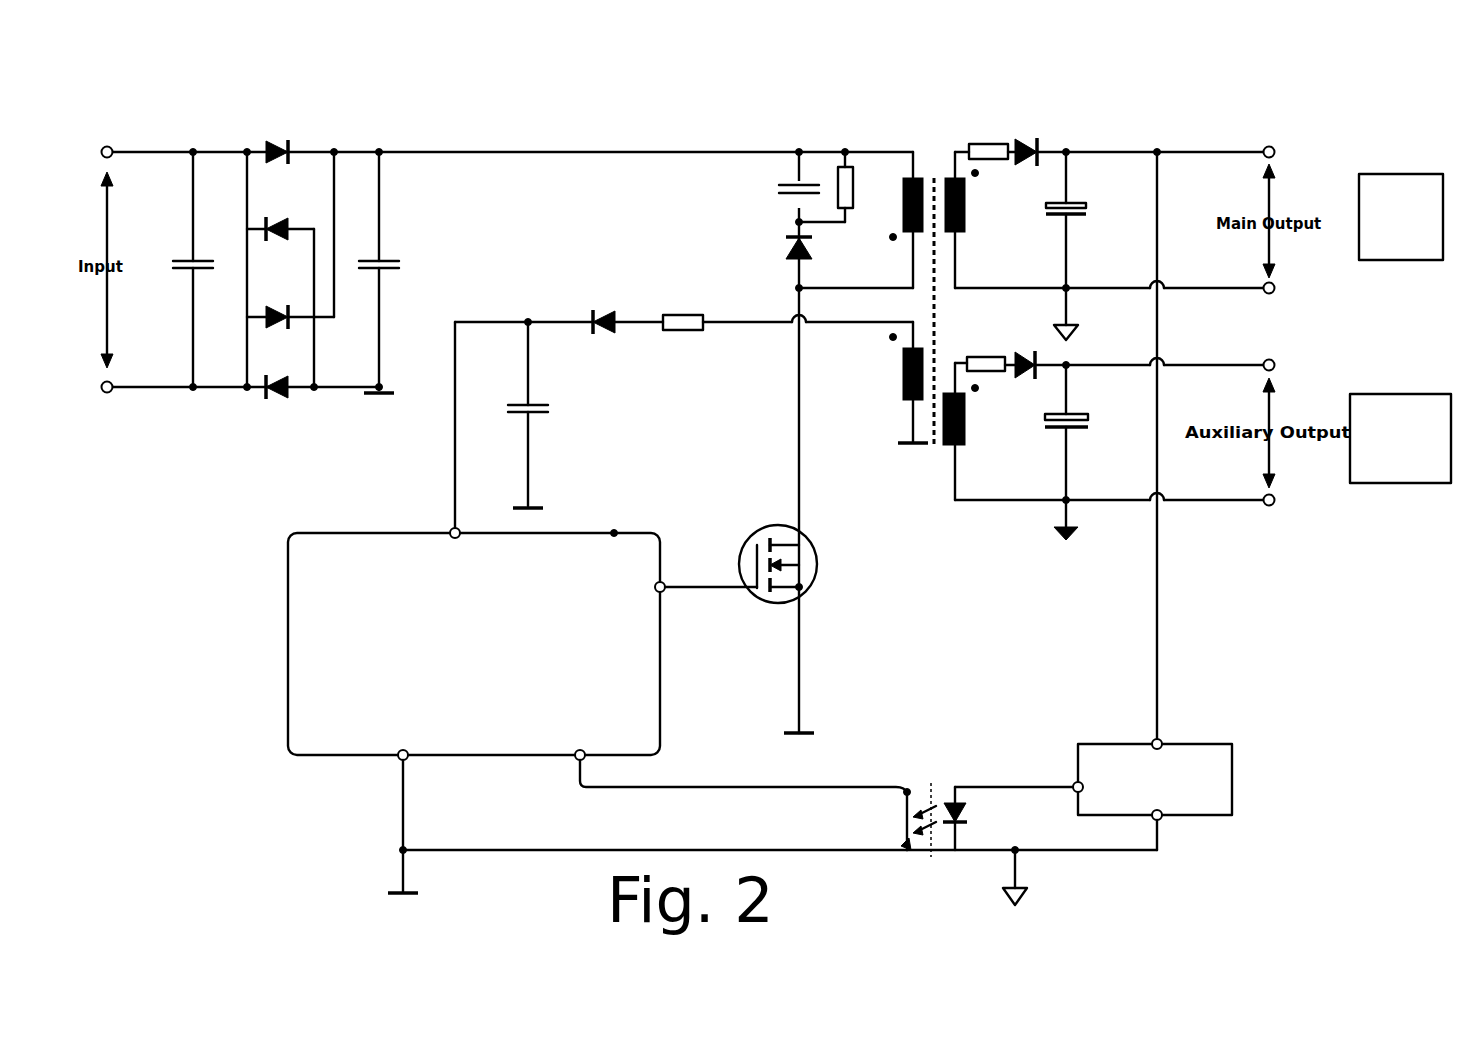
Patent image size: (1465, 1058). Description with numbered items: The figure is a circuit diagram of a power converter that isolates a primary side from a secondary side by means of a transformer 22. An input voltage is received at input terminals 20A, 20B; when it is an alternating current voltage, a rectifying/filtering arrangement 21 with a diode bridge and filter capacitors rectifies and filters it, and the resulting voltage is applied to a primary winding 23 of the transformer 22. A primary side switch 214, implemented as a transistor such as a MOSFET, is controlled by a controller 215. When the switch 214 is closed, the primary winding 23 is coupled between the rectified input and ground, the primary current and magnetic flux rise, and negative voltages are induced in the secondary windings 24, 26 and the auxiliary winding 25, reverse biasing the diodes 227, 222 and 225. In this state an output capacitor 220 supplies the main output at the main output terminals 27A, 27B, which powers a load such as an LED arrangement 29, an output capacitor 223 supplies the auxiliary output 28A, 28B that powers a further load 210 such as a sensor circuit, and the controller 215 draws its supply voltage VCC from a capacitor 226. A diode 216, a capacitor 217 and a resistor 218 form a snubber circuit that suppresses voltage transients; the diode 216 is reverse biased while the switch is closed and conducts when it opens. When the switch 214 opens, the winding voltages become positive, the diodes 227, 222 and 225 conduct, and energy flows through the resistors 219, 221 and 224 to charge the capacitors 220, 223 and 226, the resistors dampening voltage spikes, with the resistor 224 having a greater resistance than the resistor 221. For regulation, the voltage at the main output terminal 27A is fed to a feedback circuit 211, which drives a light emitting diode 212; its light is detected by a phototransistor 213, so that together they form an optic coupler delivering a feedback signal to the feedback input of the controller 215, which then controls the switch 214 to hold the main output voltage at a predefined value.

The input terminal 20A is at (113, 146).
The input terminal 20B is at (112, 392).
The rectifying/filtering arrangement 21 is at (276, 426).
The transformer 22 is at (940, 508).
The primary winding 23 is at (903, 190).
The secondary winding 24 is at (951, 176).
The auxiliary winding 25 is at (903, 372).
The secondary winding 26 is at (965, 420).
The main output terminal 27A is at (1277, 147).
The main output terminal 27B is at (1276, 294).
The auxiliary output terminal 28A is at (1276, 367).
The auxiliary output terminal 28B is at (1276, 505).
The LED arrangement 29 is at (1378, 172).
The load 210 is at (1380, 393).
The feedback circuit 211 is at (1196, 745).
The light emitting diode 212 is at (968, 805).
The phototransistor 213 is at (909, 790).
The primary side switch 214 is at (817, 572).
The controller 215 is at (614, 533).
The diode 216 is at (788, 252).
The capacitor 217 is at (772, 190).
The resistor 218 is at (830, 172).
The resistor 219 is at (990, 142).
The output capacitor 220 is at (1082, 195).
The resistor 221 is at (975, 356).
The diode 222 is at (1030, 355).
The output capacitor 223 is at (1084, 416).
The resistor 224 is at (678, 333).
The diode 225 is at (601, 311).
The capacitor 226 is at (550, 412).
The diode 227 is at (1039, 142).